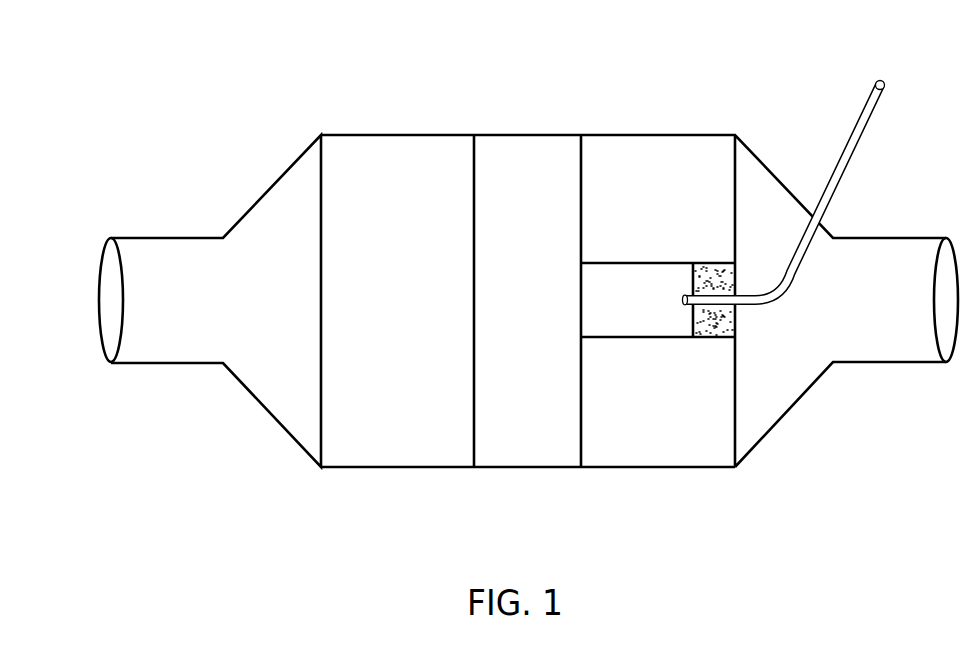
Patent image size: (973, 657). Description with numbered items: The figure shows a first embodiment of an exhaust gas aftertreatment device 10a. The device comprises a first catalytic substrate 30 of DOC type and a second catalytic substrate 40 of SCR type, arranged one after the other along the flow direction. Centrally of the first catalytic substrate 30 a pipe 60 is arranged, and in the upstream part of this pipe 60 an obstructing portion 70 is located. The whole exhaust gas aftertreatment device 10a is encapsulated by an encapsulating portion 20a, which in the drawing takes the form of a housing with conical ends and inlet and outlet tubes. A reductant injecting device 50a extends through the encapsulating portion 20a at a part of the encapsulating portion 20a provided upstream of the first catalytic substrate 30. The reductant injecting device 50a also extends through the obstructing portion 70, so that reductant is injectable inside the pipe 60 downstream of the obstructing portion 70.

The exhaust gas aftertreatment device 10a is at (738, 86).
The encapsulating portion 20a is at (537, 135).
The first catalytic substrate 30 is at (668, 232).
The second catalytic substrate 40 is at (421, 319).
The reductant injecting device 50a is at (796, 252).
The pipe 60 is at (640, 314).
The obstructing portion 70 is at (737, 317).